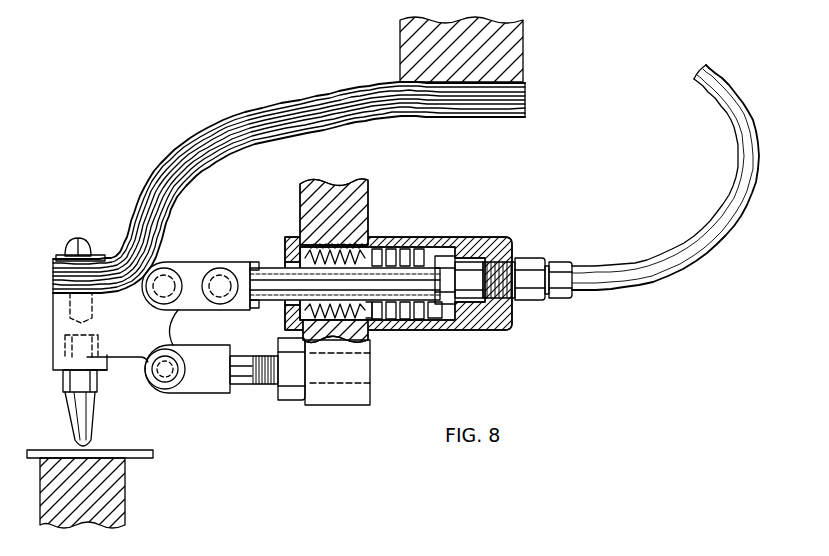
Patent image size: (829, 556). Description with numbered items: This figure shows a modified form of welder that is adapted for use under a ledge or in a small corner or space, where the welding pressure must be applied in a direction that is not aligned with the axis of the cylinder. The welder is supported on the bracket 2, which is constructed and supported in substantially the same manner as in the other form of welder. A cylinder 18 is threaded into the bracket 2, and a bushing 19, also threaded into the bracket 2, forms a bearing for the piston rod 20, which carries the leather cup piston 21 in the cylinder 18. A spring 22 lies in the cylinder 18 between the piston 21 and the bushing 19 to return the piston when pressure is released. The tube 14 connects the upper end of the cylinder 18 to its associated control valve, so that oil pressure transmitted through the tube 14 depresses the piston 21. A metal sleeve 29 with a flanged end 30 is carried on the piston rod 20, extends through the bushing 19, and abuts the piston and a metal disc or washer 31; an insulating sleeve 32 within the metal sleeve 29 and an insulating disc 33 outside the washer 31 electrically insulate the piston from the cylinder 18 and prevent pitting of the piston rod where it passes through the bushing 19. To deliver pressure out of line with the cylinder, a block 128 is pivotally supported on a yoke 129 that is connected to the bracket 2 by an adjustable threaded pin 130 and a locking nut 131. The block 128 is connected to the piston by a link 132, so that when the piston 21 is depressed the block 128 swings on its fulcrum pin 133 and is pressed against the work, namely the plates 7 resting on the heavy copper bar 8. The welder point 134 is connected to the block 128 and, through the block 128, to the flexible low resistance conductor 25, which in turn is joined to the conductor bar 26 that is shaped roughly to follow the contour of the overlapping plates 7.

The bracket 2 is at (354, 215).
The plates 7 is at (118, 456).
The heavy copper bar 8 is at (110, 490).
The tube 14 is at (648, 270).
The cylinder 18 is at (483, 242).
The bushing 19 is at (296, 250).
The piston rod 20 is at (427, 263).
The leather cup piston 21 is at (433, 300).
The spring 22 is at (373, 308).
The flexible low resistance conductor 25 is at (166, 178).
The conductor bar 26 is at (512, 66).
The metal sleeve 29 is at (384, 240).
The flanged end 30 is at (406, 321).
The metal disc or washer 31 is at (255, 308).
The insulating sleeve 32 is at (398, 284).
The insulating disc 33 is at (254, 261).
The block 128 is at (122, 346).
The yoke 129 is at (207, 386).
The adjustable threaded pin 130 is at (249, 383).
The locking nut 131 is at (293, 393).
The link 132 is at (193, 272).
The fulcrum pin 133 is at (167, 373).
The welder point 134 is at (78, 410).